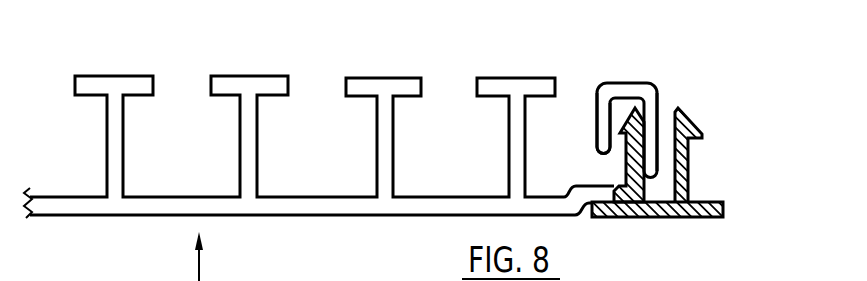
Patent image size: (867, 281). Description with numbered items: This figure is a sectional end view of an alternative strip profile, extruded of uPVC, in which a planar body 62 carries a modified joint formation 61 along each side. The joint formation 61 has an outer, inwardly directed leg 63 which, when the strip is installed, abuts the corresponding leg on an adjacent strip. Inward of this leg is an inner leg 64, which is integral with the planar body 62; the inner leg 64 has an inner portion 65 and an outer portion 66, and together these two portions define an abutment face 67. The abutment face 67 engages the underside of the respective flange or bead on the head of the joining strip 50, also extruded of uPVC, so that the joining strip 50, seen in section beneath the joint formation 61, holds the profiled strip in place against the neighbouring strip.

The joining strip 50 is at (698, 218).
The joint formation 61 is at (632, 73).
The planar body 62 is at (362, 216).
The outer, inwardly directed leg 63 is at (660, 107).
The inner leg 64 is at (594, 118).
The inner portion 65 is at (603, 172).
The outer portion 66 is at (603, 108).
The abutment face 67 is at (591, 143).